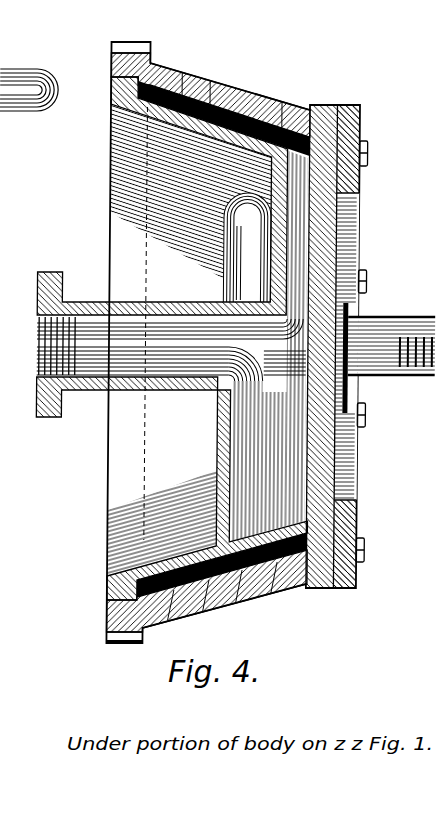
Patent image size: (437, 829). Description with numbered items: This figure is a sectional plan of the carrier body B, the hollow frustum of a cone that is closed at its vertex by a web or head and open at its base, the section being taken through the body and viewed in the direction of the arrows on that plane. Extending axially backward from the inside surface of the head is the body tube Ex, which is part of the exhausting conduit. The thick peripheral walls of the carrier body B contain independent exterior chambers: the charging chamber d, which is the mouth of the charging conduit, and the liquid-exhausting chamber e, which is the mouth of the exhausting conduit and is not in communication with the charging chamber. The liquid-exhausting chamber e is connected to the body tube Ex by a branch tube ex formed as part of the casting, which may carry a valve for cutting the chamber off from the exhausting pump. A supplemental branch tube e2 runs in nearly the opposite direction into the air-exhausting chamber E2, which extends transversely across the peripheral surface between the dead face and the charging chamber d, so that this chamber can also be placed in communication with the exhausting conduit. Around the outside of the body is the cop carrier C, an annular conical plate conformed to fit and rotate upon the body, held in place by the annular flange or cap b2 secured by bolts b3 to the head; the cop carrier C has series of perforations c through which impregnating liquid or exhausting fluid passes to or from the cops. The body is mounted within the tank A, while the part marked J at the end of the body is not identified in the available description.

The body B is at (101, 92).
The flange J is at (129, 51).
The cop carrier C is at (230, 103).
The perforations c is at (213, 85).
The liquid-exhausting chamber e is at (258, 582).
The charging chamber d is at (247, 247).
The body tube Ex is at (171, 338).
The branch tube ex is at (293, 399).
The air-exhausting chamber E2 is at (272, 113).
The supplemental branch tube e2 is at (298, 267).
The annular flange or cap b2 is at (361, 121).
The bolts b3 is at (368, 155).
The tank A is at (29, 103).